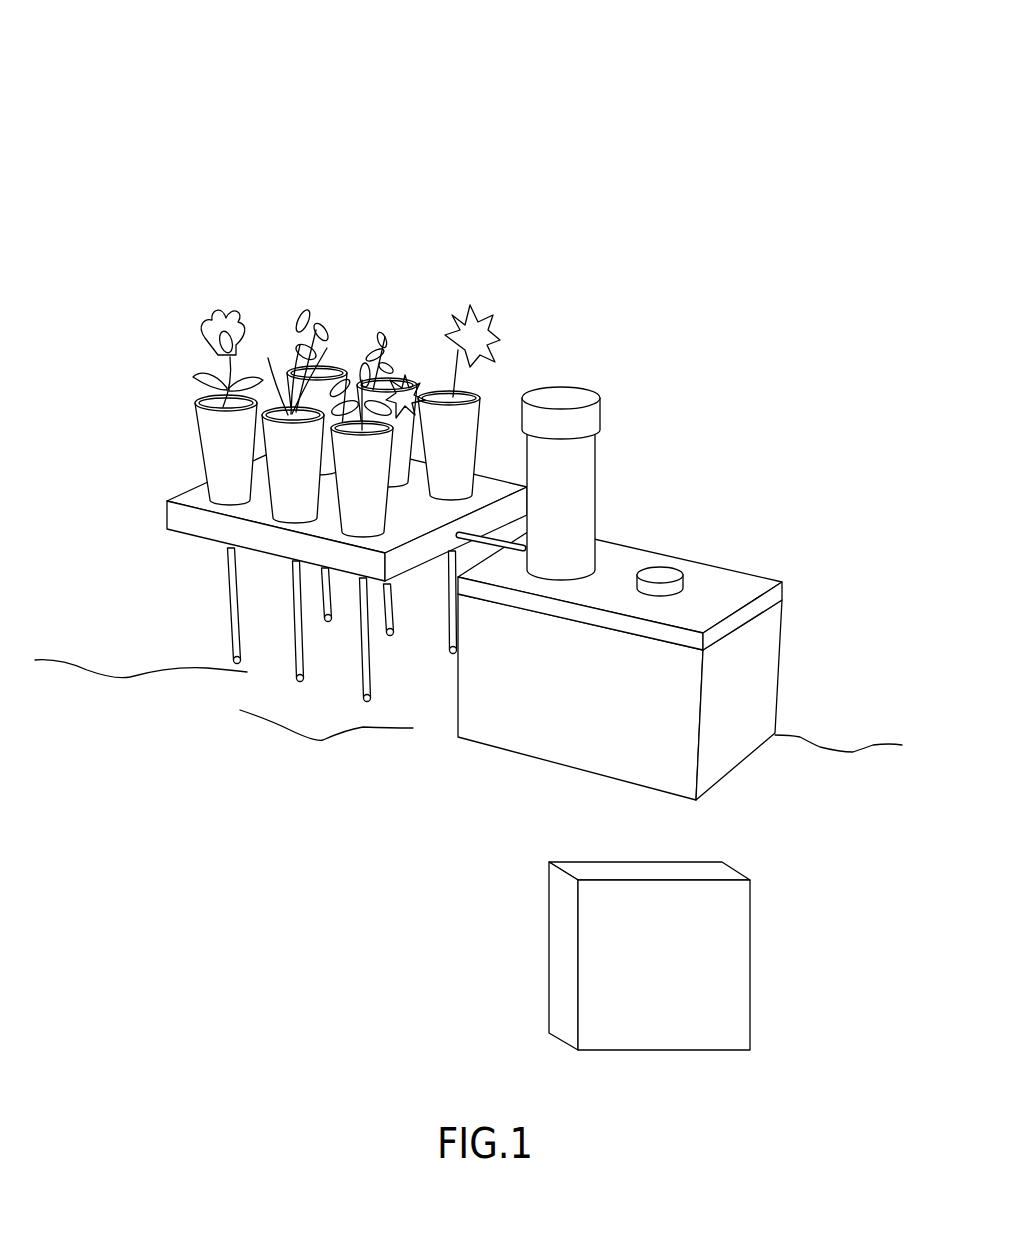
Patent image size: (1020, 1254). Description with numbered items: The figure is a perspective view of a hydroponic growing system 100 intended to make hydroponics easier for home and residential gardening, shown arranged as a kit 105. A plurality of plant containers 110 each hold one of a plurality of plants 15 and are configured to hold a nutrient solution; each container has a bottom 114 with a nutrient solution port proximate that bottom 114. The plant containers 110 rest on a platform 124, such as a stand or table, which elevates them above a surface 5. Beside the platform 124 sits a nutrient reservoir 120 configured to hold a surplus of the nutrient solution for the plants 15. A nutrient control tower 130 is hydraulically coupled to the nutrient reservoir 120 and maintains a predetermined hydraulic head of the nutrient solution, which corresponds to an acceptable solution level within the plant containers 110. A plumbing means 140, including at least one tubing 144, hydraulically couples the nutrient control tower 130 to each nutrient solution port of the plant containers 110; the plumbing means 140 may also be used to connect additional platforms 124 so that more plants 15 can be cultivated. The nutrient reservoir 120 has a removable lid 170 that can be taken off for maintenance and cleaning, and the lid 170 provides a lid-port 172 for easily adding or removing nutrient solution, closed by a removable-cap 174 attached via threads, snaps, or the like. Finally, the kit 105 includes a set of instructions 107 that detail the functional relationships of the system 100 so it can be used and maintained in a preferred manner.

The hydroponic growing system 100 is at (577, 92).
The kit 105 is at (624, 138).
The surface 5 is at (87, 670).
The plants 15 is at (323, 325).
The plant containers 110 is at (210, 443).
The bottom 114 is at (217, 507).
The platform 124 is at (212, 542).
The nutrient reservoir 120 is at (685, 626).
The lid 170 is at (685, 551).
The lid-port 172 is at (757, 607).
The removable-cap 174 is at (663, 566).
The nutrient control tower 130 is at (594, 481).
The plumbing means 140 is at (545, 540).
The tubing 144 is at (483, 546).
The instructions 107 is at (750, 920).